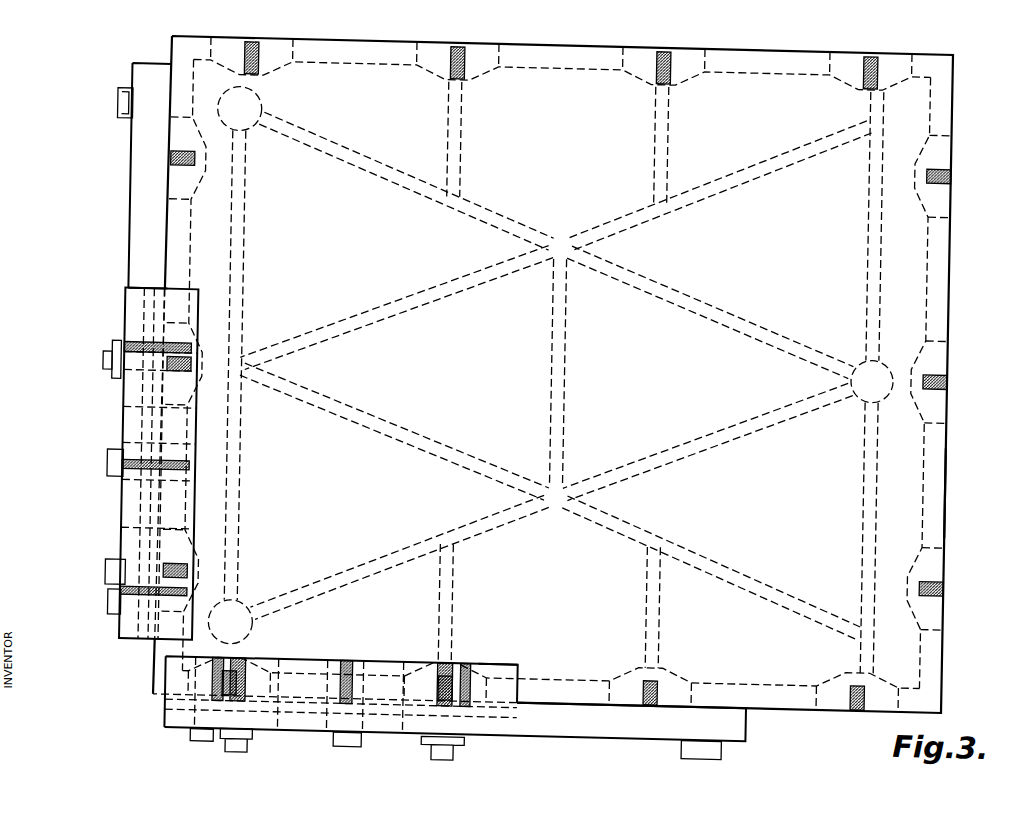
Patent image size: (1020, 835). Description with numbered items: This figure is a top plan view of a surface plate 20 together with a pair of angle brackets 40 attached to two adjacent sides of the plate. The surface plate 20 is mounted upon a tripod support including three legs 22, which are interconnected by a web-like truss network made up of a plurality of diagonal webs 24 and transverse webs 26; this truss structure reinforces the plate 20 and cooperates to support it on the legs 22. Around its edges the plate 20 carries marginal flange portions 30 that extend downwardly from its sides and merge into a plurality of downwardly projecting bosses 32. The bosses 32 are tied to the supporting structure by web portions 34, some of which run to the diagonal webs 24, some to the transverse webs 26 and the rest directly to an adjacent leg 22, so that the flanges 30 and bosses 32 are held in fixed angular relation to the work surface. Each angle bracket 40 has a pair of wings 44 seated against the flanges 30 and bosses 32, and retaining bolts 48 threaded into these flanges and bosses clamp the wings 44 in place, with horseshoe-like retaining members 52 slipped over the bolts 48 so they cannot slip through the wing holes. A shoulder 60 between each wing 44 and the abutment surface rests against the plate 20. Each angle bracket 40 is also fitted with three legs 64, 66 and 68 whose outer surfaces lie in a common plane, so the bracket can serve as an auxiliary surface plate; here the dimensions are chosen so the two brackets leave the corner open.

The surface plate 20 is at (953, 106).
The legs 22 is at (250, 102).
The diagonal webs 24 is at (790, 146).
The transverse webs 26 is at (248, 230).
The marginal flange portions 30 is at (950, 470).
The bosses 32 is at (940, 542).
The web portions 34 is at (190, 150).
The angle bracket 40 is at (188, 410).
The wings 44 is at (150, 148).
The retaining bolts 48 is at (114, 373).
The retaining members 52 is at (124, 344).
The shoulder 60 is at (190, 288).
The leg 64 is at (122, 610).
The leg 66 is at (120, 100).
The leg 68 is at (118, 471).